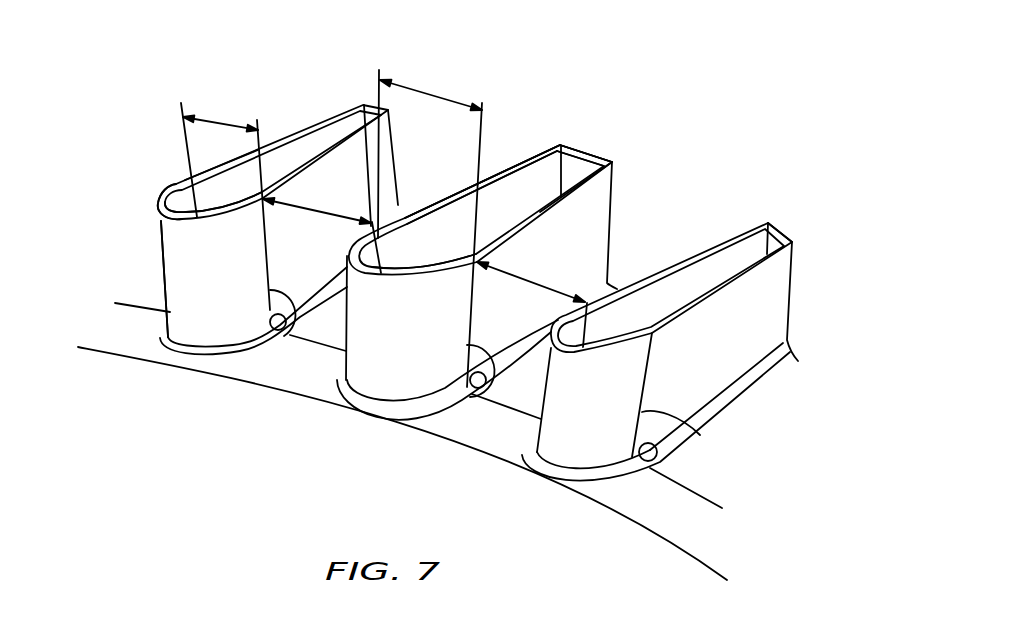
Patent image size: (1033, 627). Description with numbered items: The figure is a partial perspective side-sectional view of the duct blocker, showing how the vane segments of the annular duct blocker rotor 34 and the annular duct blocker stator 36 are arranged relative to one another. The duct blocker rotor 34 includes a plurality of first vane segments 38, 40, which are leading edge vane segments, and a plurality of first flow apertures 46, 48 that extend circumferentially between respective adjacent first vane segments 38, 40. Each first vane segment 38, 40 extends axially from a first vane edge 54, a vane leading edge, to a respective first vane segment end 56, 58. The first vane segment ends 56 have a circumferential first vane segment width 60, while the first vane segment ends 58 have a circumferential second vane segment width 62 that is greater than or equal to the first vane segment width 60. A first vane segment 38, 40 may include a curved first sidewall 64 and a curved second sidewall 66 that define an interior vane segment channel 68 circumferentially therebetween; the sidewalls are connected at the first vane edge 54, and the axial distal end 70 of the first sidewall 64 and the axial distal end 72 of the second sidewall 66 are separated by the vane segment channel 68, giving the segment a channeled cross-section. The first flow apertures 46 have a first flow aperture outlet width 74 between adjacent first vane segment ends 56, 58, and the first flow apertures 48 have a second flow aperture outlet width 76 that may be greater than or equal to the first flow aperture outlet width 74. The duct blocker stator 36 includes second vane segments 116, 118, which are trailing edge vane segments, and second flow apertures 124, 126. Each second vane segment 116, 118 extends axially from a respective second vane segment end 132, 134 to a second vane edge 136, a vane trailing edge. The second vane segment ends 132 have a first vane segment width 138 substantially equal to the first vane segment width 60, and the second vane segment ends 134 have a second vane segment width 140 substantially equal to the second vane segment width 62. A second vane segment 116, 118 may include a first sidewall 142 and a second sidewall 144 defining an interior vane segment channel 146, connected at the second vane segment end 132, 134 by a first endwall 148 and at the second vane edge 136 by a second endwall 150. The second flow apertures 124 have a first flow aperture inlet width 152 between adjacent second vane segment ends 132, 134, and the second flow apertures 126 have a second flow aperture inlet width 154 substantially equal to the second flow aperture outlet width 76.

The duct blocker rotor 34 is at (180, 410).
The duct blocker stator 36 is at (693, 88).
The first vane segment 38 is at (193, 340).
The first vane segment 40 is at (387, 385).
The first flow aperture 46 is at (313, 363).
The first flow aperture 48 is at (500, 430).
The first vane edge 54 is at (163, 228).
The first vane segment end 56 is at (273, 345).
The first vane segment end 58 is at (463, 402).
The first vane segment width 60 is at (205, 86).
The first vane segment width 138 is at (222, 117).
The second vane segment width 62 is at (430, 120).
The second vane segment width 140 is at (433, 92).
The first sidewall 64 is at (160, 198).
The second sidewall 66 is at (220, 218).
The vane segment channel 68 is at (205, 202).
The axial distal end of first sidewall 70 is at (184, 180).
The axial distal end of second sidewall 72 is at (267, 203).
The first flow aperture outlet width 74 is at (317, 149).
The first flow aperture inlet width 152 is at (327, 212).
The second flow aperture outlet width 76 is at (538, 264).
The second flow aperture inlet width 154 is at (540, 286).
The second vane segment 116 is at (398, 167).
The second vane segment 118 is at (610, 252).
The second flow aperture 124 is at (507, 110).
The second flow aperture 126 is at (717, 217).
The second vane segment end 132 is at (293, 340).
The second vane segment end 134 is at (489, 405).
The second vane edge 136 is at (582, 148).
The first sidewall 142 is at (532, 160).
The second sidewall 144 is at (594, 184).
The vane segment channel 146 is at (508, 208).
The first endwall 148 is at (430, 255).
The second endwall 150 is at (613, 162).